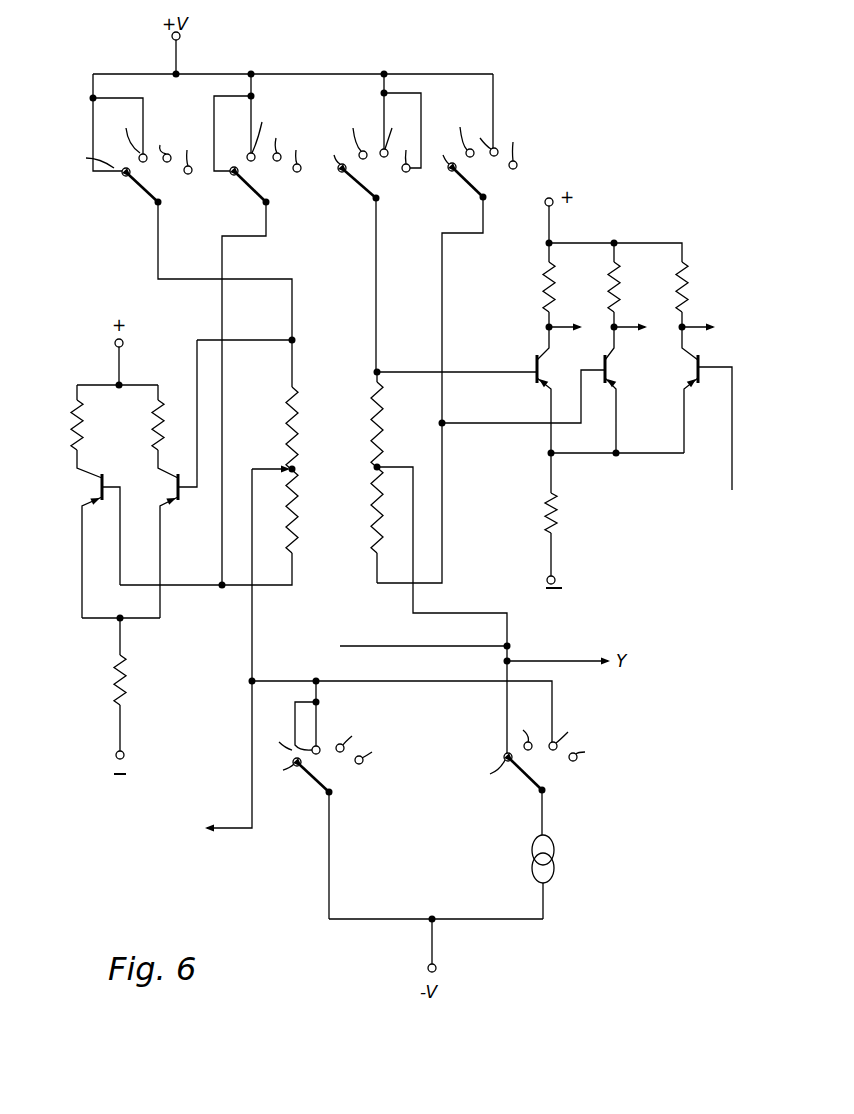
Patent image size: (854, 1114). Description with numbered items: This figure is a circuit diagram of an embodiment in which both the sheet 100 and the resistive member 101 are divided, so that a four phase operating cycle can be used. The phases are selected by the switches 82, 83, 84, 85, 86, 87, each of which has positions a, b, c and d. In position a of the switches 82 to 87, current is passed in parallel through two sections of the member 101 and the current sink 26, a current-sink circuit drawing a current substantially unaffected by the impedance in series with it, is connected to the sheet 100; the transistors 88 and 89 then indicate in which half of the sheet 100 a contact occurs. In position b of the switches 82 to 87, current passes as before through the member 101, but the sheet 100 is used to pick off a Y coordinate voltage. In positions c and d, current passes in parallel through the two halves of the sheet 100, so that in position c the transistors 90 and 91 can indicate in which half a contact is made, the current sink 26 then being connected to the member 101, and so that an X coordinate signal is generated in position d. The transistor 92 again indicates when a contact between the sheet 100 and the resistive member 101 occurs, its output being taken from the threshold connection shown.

The switch 82 is at (136, 198).
The switch 83 is at (260, 198).
The switch 84 is at (368, 197).
The switch 85 is at (471, 195).
The switch 86 is at (311, 792).
The switch 87 is at (525, 790).
The transistor 88 is at (535, 360).
The transistor 89 is at (604, 360).
The transistor 90 is at (106, 474).
The transistor 91 is at (180, 501).
The transistor 92 is at (700, 360).
The sheet 100 is at (381, 424).
The resistive member 101 is at (289, 423).
The current-sink circuit 26 is at (555, 851).